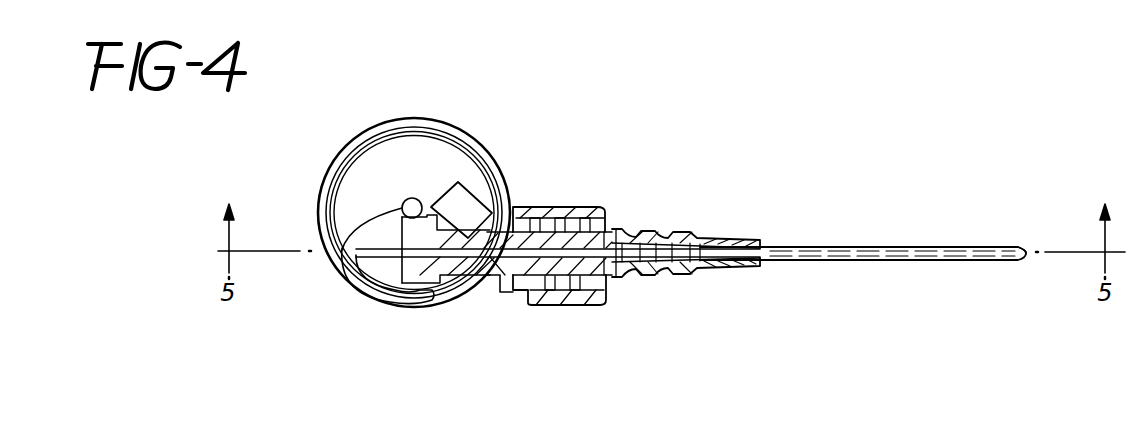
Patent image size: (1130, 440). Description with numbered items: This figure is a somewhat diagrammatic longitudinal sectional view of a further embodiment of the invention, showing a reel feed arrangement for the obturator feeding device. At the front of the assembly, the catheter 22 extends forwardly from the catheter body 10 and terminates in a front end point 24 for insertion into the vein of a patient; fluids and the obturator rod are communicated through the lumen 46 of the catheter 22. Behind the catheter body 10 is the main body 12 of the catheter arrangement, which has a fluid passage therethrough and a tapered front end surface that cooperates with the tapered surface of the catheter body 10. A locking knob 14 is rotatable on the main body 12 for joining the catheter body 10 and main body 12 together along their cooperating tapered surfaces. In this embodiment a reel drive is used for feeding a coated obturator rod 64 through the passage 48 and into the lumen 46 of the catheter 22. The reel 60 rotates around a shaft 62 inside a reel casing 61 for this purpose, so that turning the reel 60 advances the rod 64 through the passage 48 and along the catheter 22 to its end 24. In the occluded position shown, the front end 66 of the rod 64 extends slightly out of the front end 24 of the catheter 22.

The catheter body 10 is at (653, 230).
The main body 12 is at (487, 291).
The locking knob 14 is at (540, 206).
The catheter 22 is at (960, 247).
The front end point 24 is at (1025, 248).
The lumen 46 is at (930, 260).
The supply tube 48 is at (616, 250).
The reel 60 is at (372, 292).
The reel casing 61 is at (427, 307).
The shaft 62 is at (352, 244).
The obturator rod 64 is at (430, 125).
The front end of rod 66 is at (608, 252).